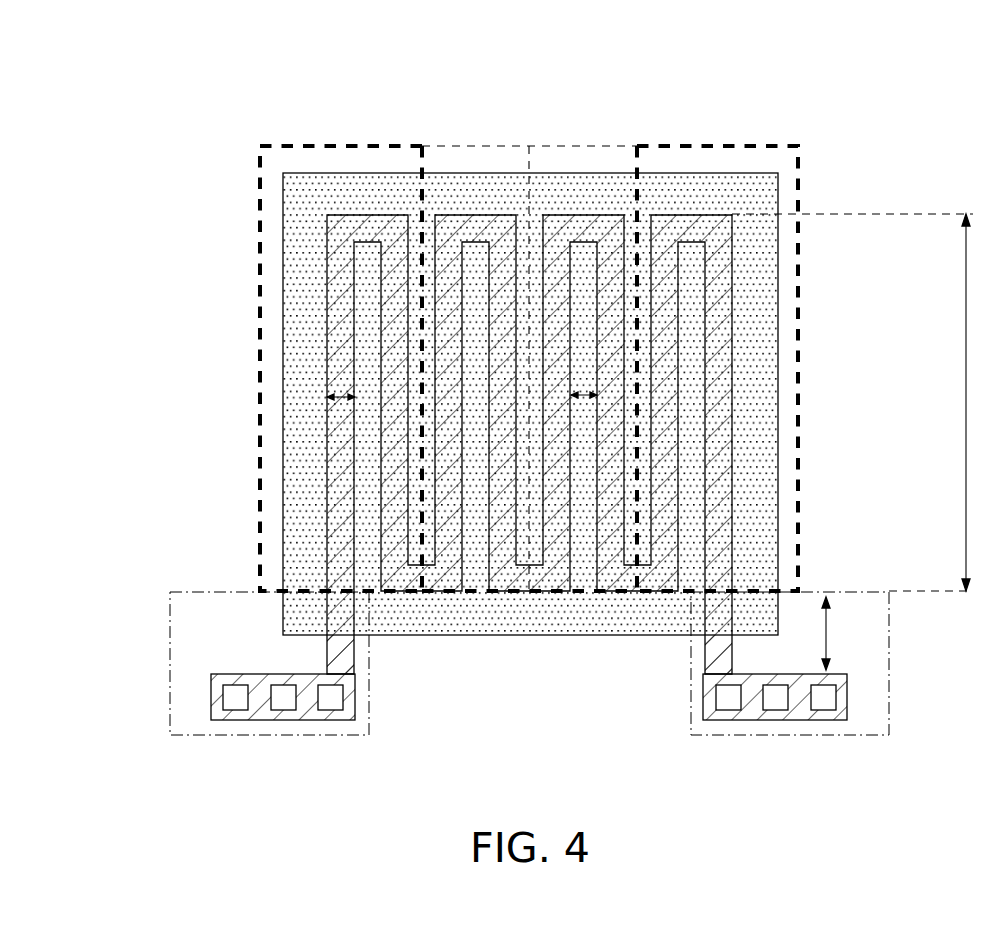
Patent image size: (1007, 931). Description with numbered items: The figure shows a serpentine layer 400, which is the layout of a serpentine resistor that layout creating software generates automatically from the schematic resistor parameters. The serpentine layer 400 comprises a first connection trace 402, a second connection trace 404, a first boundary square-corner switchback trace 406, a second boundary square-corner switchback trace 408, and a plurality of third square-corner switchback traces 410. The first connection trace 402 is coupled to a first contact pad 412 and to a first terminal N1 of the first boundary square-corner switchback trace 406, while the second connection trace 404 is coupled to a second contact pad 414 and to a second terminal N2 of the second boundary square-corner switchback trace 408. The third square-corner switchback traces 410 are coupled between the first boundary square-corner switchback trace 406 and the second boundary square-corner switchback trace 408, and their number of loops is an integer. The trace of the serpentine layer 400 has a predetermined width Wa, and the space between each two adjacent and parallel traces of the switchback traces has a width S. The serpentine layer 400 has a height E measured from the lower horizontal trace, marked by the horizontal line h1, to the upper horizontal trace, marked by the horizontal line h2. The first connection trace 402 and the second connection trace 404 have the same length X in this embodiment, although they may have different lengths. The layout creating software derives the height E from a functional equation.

The serpentine layer 400 is at (915, 63).
The first connection trace 402 is at (335, 655).
The second connection trace 404 is at (722, 655).
The first boundary square-corner switchback trace 406 is at (328, 146).
The second boundary square-corner switchback trace 408 is at (728, 146).
The third square-corner switchback traces 410 is at (477, 146).
The first contact pad 412 is at (333, 712).
The second contact pad 414 is at (728, 712).
The first terminal N1 is at (343, 593).
The second terminal N2 is at (706, 590).
The width Wa is at (330, 392).
The space width S is at (584, 383).
The height E is at (973, 402).
The length X is at (835, 633).
The horizontal line h1 is at (944, 594).
The horizontal line h2 is at (866, 217).